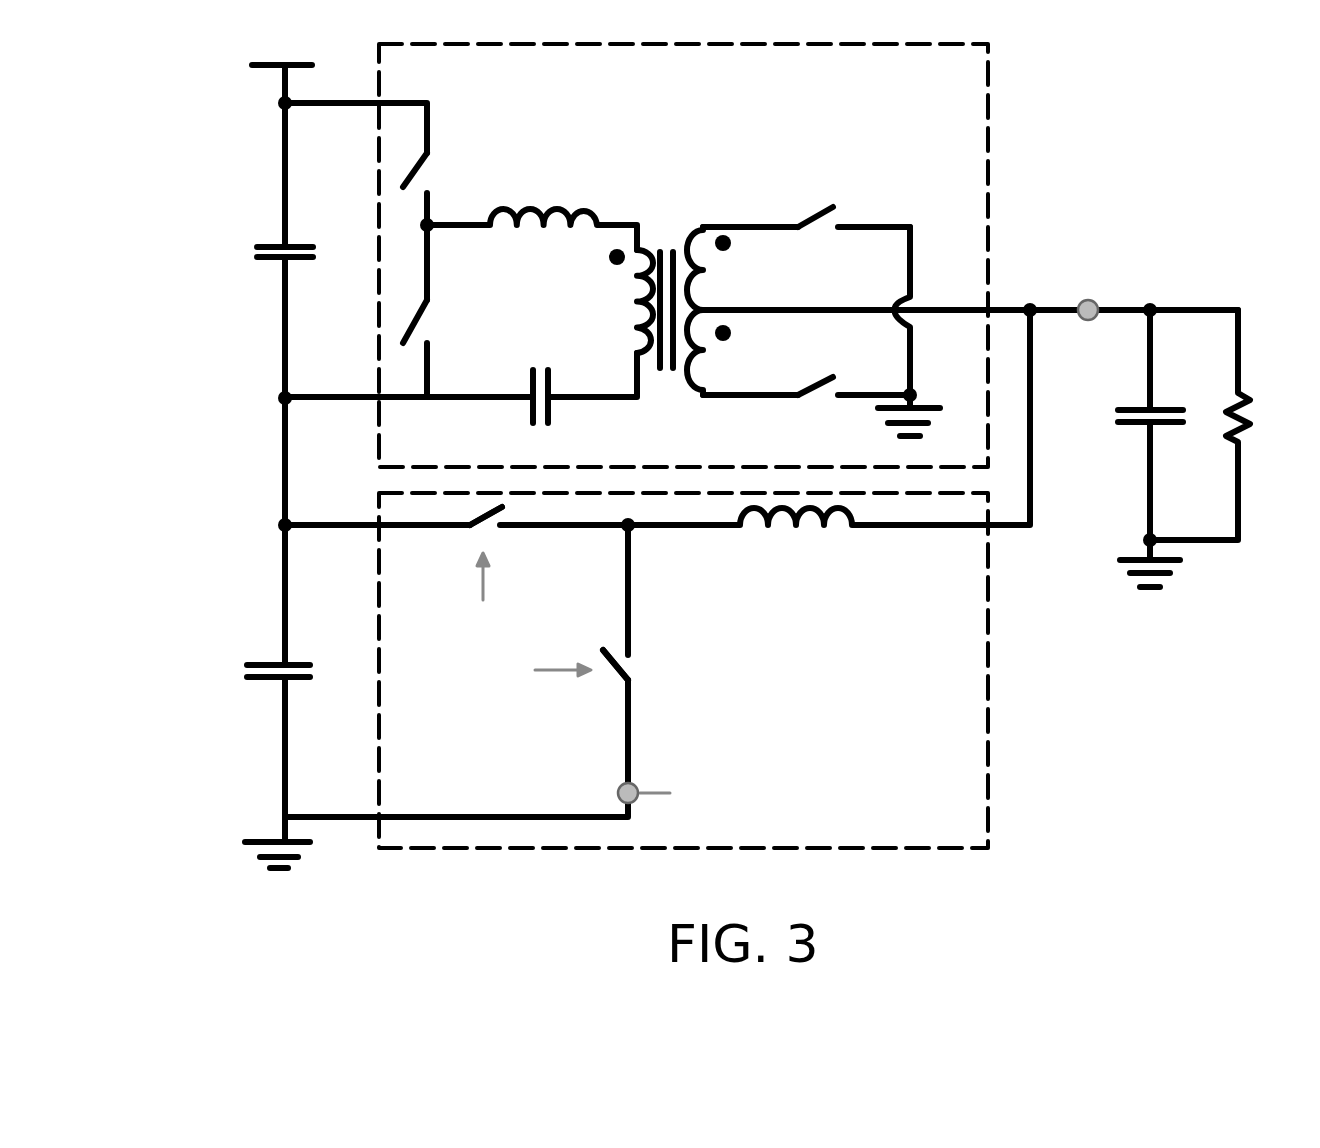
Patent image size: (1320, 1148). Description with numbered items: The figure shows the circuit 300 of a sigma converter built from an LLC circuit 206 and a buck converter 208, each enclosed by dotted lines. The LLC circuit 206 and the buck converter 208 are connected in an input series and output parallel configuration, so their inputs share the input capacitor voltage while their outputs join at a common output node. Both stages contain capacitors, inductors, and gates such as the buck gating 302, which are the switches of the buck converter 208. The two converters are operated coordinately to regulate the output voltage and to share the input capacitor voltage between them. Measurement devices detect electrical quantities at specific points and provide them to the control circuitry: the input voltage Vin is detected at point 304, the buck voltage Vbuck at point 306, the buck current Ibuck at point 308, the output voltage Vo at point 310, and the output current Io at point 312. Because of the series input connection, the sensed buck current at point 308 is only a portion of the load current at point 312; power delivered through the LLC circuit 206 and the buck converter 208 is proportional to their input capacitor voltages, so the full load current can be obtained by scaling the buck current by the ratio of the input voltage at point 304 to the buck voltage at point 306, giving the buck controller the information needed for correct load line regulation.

The circuit 300 is at (702, 475).
The LLC circuit 206 is at (988, 143).
The buck converter 208 is at (988, 695).
The buck gating 302 is at (482, 522).
The input voltage point 304 is at (278, 112).
The buck voltage point 306 is at (277, 532).
The buck current point 308 is at (631, 789).
The output voltage point 310 is at (1150, 300).
The output current point 312 is at (1093, 320).